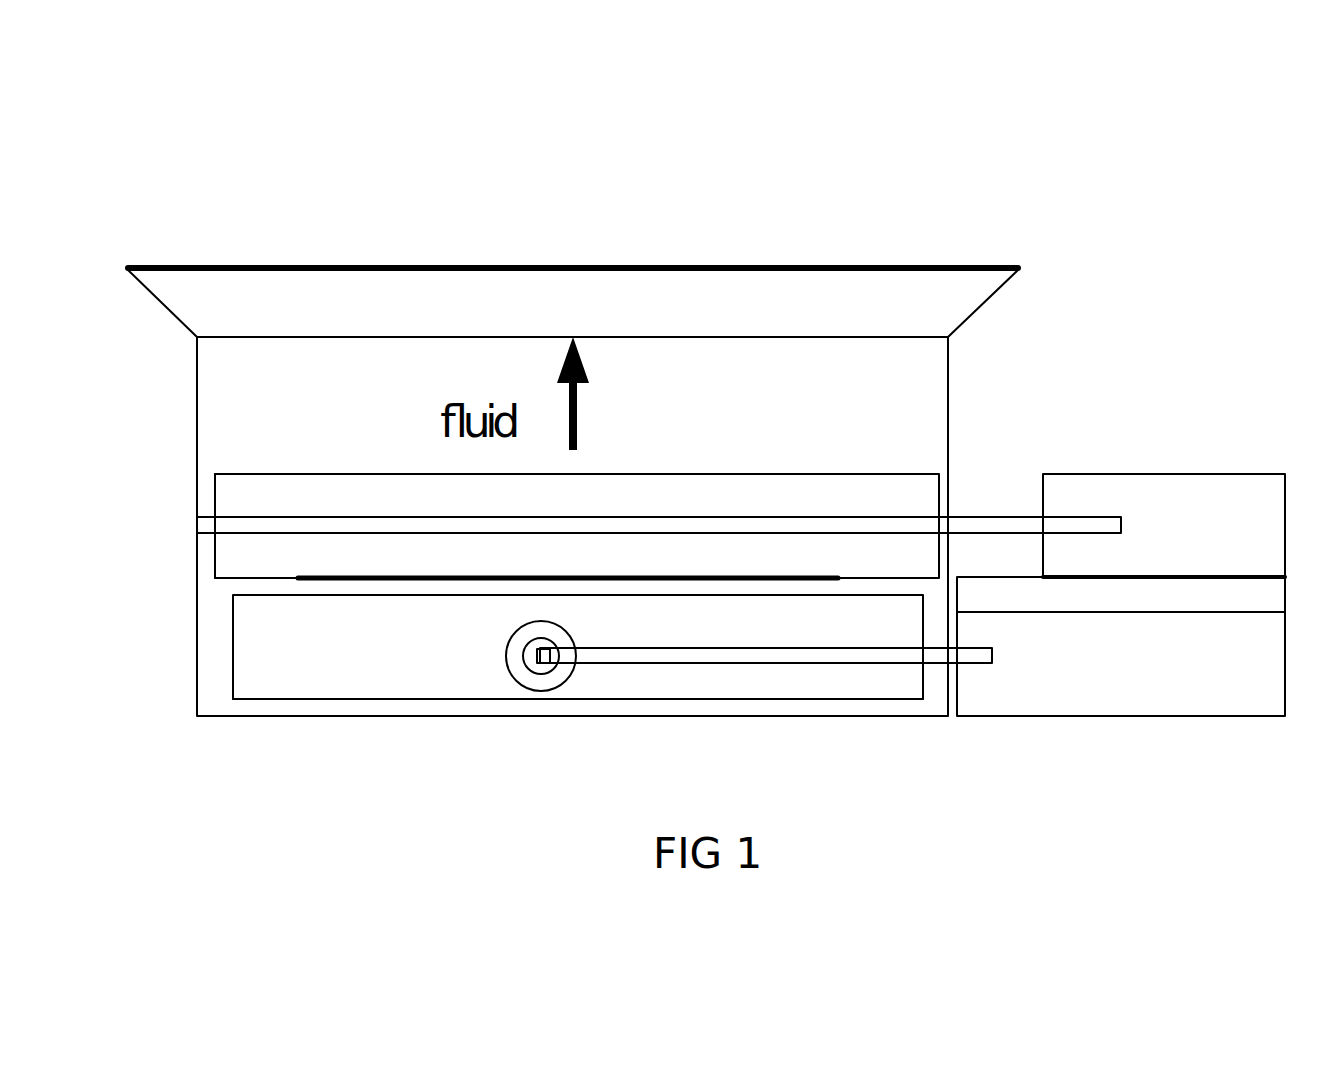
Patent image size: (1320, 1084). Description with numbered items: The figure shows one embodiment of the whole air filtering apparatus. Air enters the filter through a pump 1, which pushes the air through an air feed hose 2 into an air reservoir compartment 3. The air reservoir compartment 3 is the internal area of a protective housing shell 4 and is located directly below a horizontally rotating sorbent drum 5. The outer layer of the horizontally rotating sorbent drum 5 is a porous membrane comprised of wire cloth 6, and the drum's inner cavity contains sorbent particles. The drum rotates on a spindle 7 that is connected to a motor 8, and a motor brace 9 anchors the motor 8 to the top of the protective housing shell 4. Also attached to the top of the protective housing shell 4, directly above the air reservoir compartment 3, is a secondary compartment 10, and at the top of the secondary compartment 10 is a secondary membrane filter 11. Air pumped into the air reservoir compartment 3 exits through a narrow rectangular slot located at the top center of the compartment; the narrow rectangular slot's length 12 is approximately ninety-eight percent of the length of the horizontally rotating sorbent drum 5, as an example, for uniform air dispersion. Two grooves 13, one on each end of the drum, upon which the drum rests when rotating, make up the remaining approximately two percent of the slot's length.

The pump 1 is at (1233, 647).
The air feed hose 2 is at (767, 664).
The air reservoir compartment 3 is at (473, 647).
The protective housing shell 4 is at (1010, 577).
The horizontally rotating sorbent drum 5 is at (265, 560).
The wire cloth 6 is at (902, 575).
The spindle 7 is at (333, 533).
The motor 8 is at (1165, 474).
The motor brace 9 is at (1215, 595).
The secondary compartment 10 is at (875, 413).
The secondary membrane filter 11 is at (553, 262).
The narrow rectangular slot's length 12 is at (403, 580).
The grooves 13 is at (230, 592).